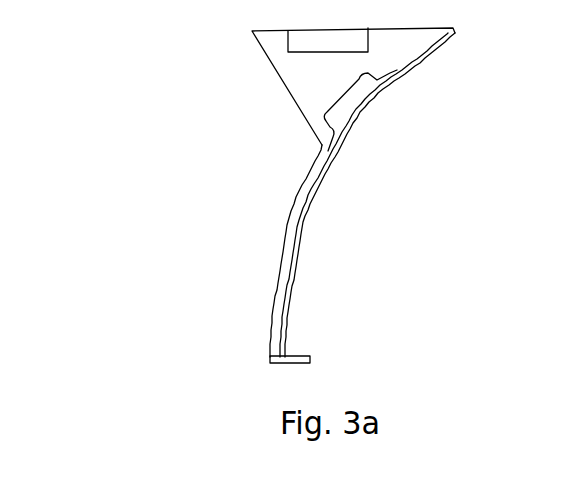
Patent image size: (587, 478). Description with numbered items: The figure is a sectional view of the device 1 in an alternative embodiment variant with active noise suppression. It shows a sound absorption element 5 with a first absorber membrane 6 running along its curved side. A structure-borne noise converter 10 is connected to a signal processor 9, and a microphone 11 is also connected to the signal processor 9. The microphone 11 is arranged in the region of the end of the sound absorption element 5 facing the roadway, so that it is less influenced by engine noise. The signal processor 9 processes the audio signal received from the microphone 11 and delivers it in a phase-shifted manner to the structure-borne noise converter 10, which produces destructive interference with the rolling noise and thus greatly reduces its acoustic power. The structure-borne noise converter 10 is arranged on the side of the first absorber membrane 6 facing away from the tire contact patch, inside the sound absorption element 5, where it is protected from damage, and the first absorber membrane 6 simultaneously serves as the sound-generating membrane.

The device 1 is at (130, 140).
The sound absorption element 5 is at (422, 155).
The first absorber membrane 6 is at (339, 222).
The signal processor 9 is at (290, 40).
The structure-borne noise converter 10 is at (333, 115).
The microphone 11 is at (310, 358).